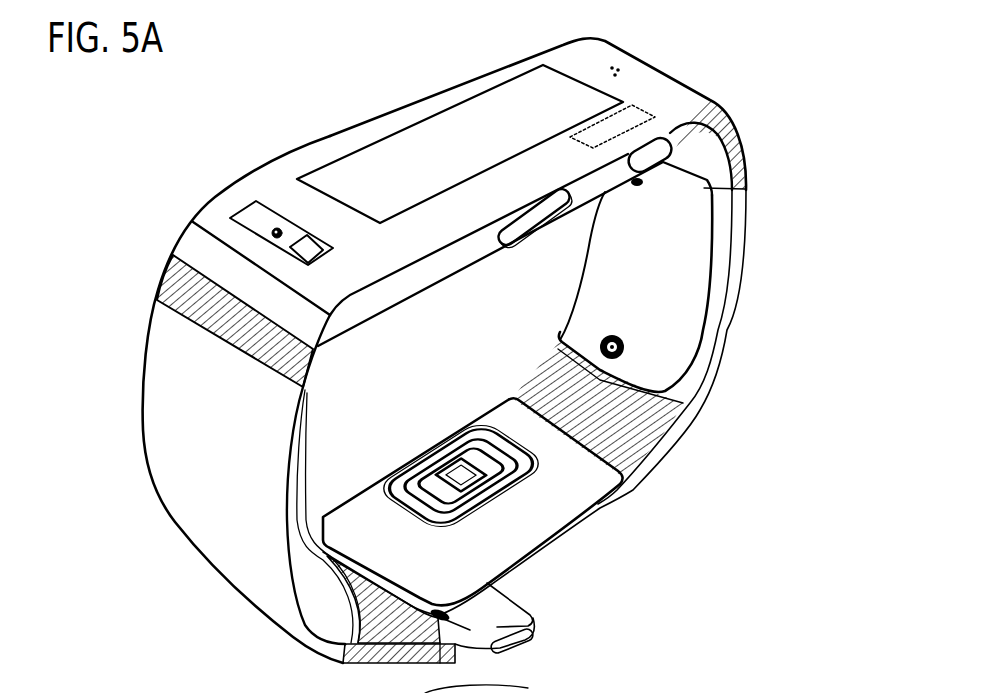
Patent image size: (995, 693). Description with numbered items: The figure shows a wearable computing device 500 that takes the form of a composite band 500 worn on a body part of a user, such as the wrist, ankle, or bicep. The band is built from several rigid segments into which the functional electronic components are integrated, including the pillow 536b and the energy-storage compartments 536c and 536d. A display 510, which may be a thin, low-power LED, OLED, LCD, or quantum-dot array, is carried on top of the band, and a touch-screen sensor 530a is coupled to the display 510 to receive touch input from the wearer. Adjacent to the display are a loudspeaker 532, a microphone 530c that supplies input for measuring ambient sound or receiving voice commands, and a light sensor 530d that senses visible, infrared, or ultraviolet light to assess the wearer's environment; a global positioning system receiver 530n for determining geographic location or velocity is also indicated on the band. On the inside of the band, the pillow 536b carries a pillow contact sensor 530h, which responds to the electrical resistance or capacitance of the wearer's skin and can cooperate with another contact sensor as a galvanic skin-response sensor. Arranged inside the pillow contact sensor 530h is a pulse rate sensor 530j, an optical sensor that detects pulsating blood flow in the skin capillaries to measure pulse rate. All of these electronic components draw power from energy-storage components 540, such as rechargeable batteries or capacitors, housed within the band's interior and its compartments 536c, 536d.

The wearable computing device 500 is at (226, 92).
The display 510 is at (467, 150).
The touch-screen sensor 530a is at (504, 108).
The microphone 530c is at (278, 228).
The light sensor 530d is at (321, 258).
The global positioning system (GPS) receiver 530n is at (632, 107).
The loudspeaker 532 is at (617, 63).
The energy-storage components 540 is at (665, 273).
The pillow 536b is at (588, 498).
The energy-storage compartment 536c is at (725, 297).
The energy-storage compartment 536d is at (193, 547).
The pulse rate sensor 530j is at (474, 460).
The pillow contact sensor 530h is at (410, 510).